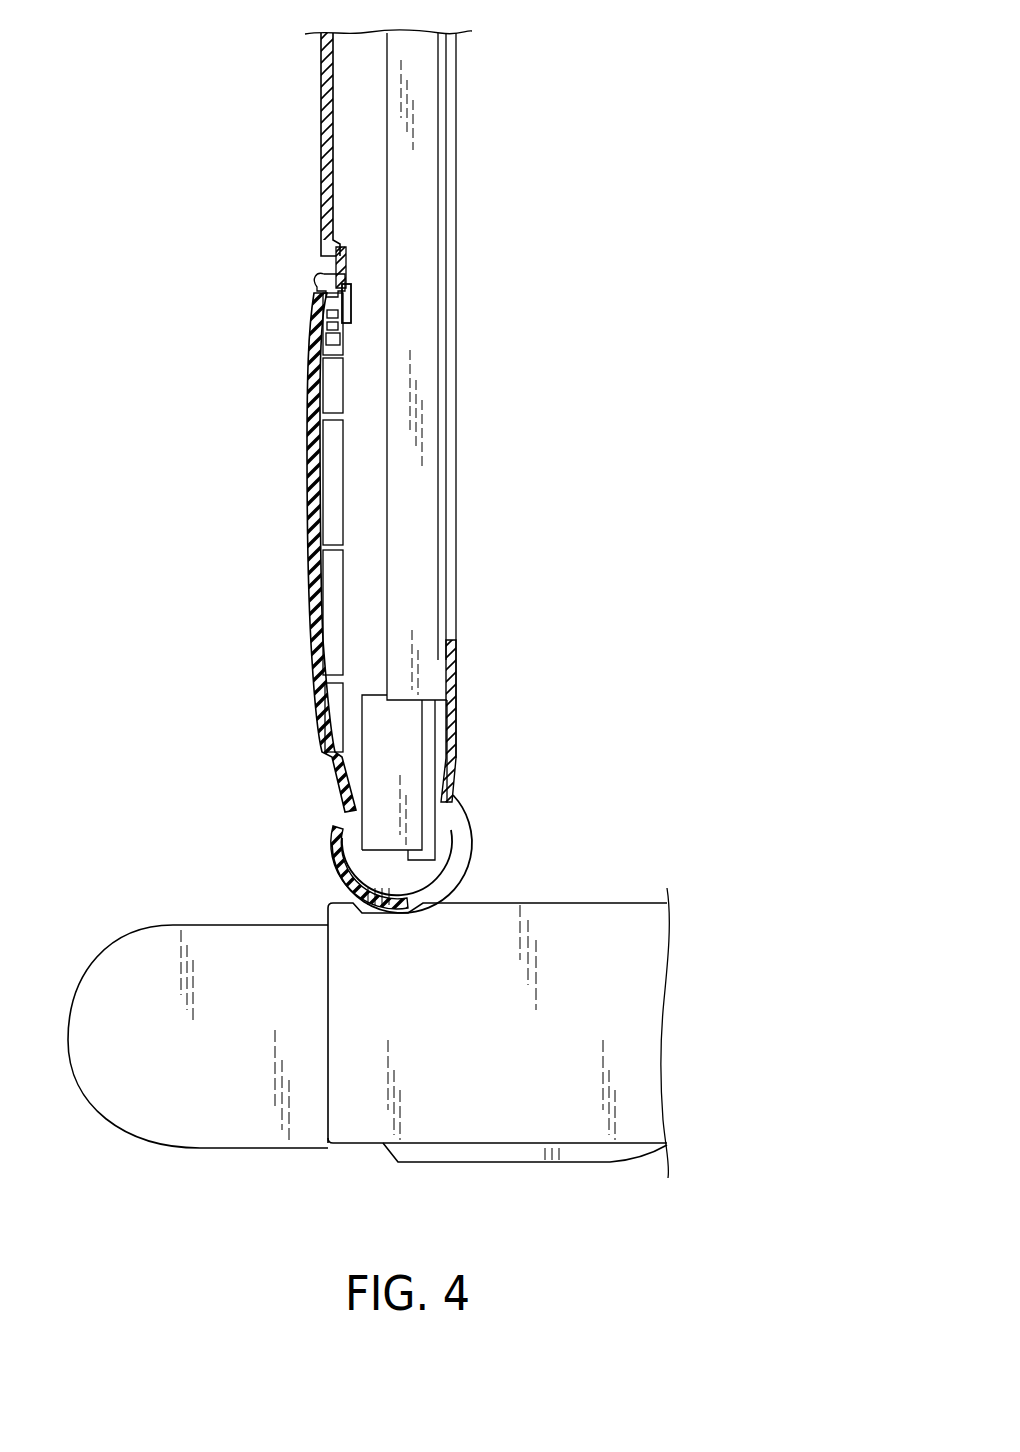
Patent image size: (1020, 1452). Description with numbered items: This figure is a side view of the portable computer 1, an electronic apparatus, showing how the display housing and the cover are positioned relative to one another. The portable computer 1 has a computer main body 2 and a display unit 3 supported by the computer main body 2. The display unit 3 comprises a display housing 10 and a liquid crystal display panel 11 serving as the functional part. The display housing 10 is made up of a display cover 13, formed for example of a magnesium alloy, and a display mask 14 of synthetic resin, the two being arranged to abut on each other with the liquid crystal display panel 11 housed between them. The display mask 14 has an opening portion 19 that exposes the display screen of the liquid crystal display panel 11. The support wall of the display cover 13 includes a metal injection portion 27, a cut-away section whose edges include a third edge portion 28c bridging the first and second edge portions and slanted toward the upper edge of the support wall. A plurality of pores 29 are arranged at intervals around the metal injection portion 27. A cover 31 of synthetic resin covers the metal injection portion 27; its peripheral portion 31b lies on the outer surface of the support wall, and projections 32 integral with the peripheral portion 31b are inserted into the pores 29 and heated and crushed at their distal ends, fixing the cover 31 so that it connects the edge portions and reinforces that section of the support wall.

The portable computer 1 is at (222, 858).
The computer main body 2 is at (605, 920).
The display unit 3 is at (465, 118).
The display housing 10 is at (320, 70).
The liquid crystal display panel 11 is at (427, 503).
The display cover 13 is at (321, 121).
The display mask 14 is at (460, 729).
The opening portion 19 is at (457, 636).
The metal injection portion 27 is at (326, 343).
The third edge portion 28c is at (330, 325).
The pores 29 is at (346, 265).
The cover 31 is at (312, 525).
The peripheral portion 31b is at (315, 284).
The projections 32 is at (349, 306).